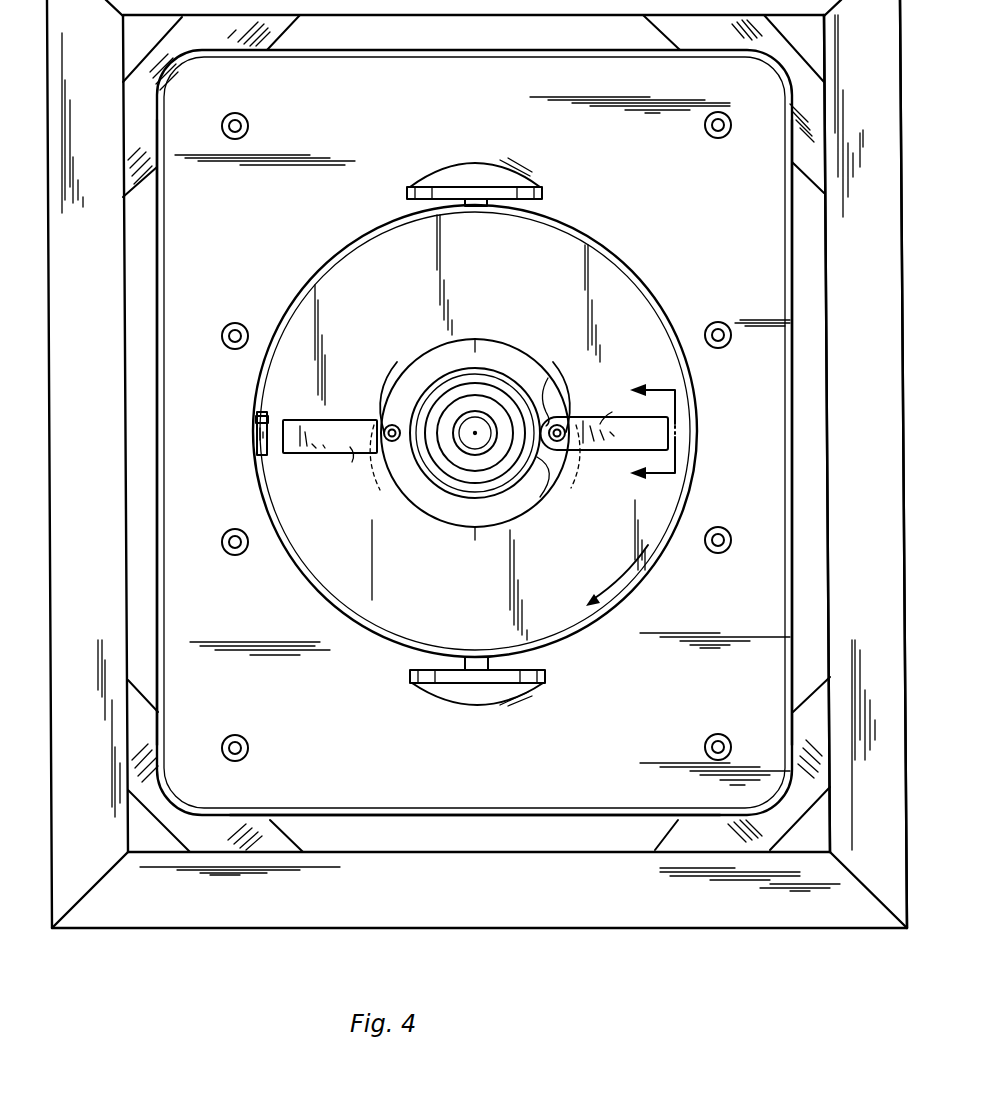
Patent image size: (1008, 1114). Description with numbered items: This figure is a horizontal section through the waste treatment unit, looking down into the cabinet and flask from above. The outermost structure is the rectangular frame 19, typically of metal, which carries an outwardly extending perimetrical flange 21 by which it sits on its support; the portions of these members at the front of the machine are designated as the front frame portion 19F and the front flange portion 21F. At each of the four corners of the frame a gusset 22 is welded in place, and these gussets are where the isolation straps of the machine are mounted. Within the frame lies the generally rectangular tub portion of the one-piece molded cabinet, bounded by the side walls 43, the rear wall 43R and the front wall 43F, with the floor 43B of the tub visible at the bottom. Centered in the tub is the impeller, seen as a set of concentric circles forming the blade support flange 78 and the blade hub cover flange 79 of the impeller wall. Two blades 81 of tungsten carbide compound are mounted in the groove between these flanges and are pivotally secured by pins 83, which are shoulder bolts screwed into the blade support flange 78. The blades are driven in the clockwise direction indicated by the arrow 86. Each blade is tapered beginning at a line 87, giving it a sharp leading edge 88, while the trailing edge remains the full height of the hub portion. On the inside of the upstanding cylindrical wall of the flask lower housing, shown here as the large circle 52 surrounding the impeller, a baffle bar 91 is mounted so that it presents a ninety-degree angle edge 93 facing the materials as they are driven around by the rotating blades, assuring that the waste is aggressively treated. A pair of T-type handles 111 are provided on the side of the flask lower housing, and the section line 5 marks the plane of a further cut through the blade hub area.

The section line 5— 5 is at (652, 437).
The rectangular frame 19 is at (458, 17).
The front portion of frame 19F is at (832, 320).
The perimetrical flange 21 is at (110, 629).
The front portion of flange 21F is at (832, 572).
The gusset 22 is at (290, 24).
The side walls of tub 43 is at (530, 50).
The rear wall of tub 43R is at (157, 236).
The front wall of tub 43F is at (794, 250).
The floor of tub 43B is at (722, 680).
The rotary disk 52 is at (630, 268).
The blade support flange 78 is at (553, 378).
The blade hub cover flange 79 is at (515, 346).
The blade 81 is at (352, 462).
The pin 83 is at (397, 375).
The arrow 86 is at (630, 560).
The taper line 87 is at (478, 470).
The sharp leading edge 88 is at (376, 412).
The baffle bar 91 is at (256, 418).
The angle edge 93 is at (268, 456).
The T-type handle 111 is at (537, 186).